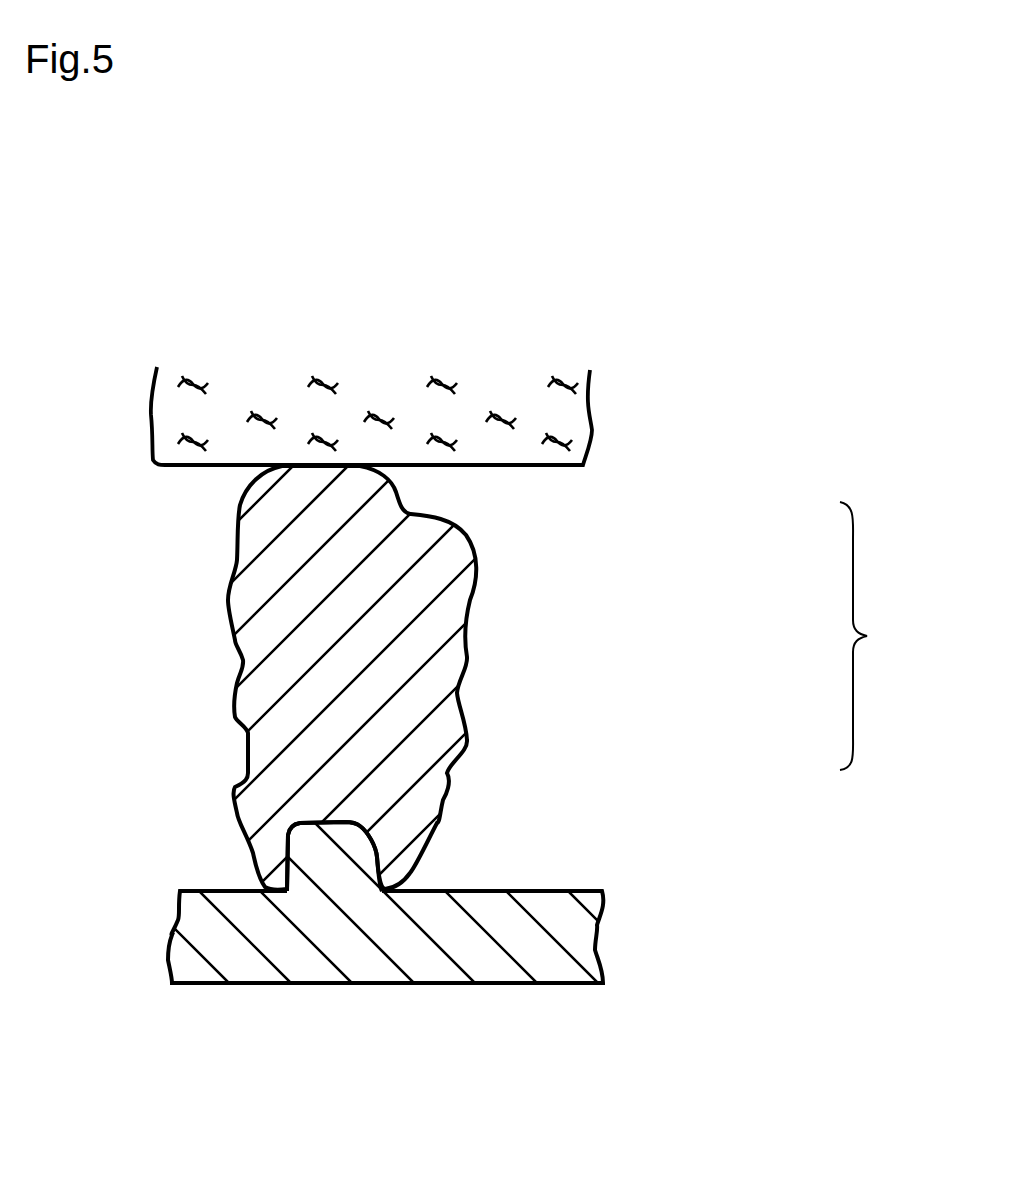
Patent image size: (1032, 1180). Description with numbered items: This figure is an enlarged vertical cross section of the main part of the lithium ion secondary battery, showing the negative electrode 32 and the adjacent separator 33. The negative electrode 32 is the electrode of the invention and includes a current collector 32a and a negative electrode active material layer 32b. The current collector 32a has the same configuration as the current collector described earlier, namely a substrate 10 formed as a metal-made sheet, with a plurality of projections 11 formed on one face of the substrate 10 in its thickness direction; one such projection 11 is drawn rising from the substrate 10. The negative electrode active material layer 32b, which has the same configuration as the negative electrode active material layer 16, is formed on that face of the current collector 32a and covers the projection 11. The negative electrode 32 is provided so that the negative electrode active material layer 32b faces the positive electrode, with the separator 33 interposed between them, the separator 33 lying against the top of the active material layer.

The substrate 10 is at (535, 888).
The projection 11 is at (343, 815).
The negative electrode active material layer 16 is at (423, 580).
The negative electrode 32 is at (880, 636).
The current collector 32a is at (670, 845).
The negative electrode active material layer 32b is at (672, 614).
The separator 33 is at (545, 437).